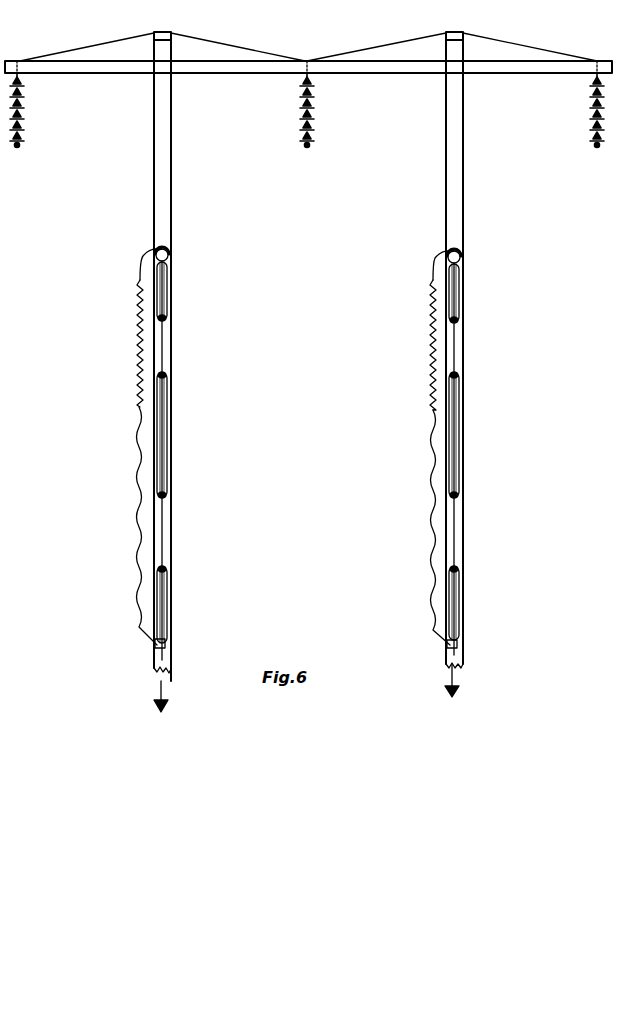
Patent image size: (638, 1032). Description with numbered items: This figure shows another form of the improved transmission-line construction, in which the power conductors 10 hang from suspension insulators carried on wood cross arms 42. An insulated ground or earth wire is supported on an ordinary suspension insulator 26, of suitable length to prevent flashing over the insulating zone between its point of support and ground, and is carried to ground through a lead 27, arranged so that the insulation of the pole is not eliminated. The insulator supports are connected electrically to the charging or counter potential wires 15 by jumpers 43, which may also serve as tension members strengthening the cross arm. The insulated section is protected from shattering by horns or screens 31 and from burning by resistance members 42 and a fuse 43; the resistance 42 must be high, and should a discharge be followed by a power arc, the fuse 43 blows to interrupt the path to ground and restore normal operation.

The charging or counter potential wire 15 is at (165, 30).
The wood cross arm / resistance member 42 is at (137, 74).
The jumper / fuse 43 is at (92, 48).
The power conductor 10 is at (19, 147).
The suspension insulator 26 is at (169, 254).
The lead / jumper 27 is at (164, 540).
The horns or screens 31 is at (169, 318).